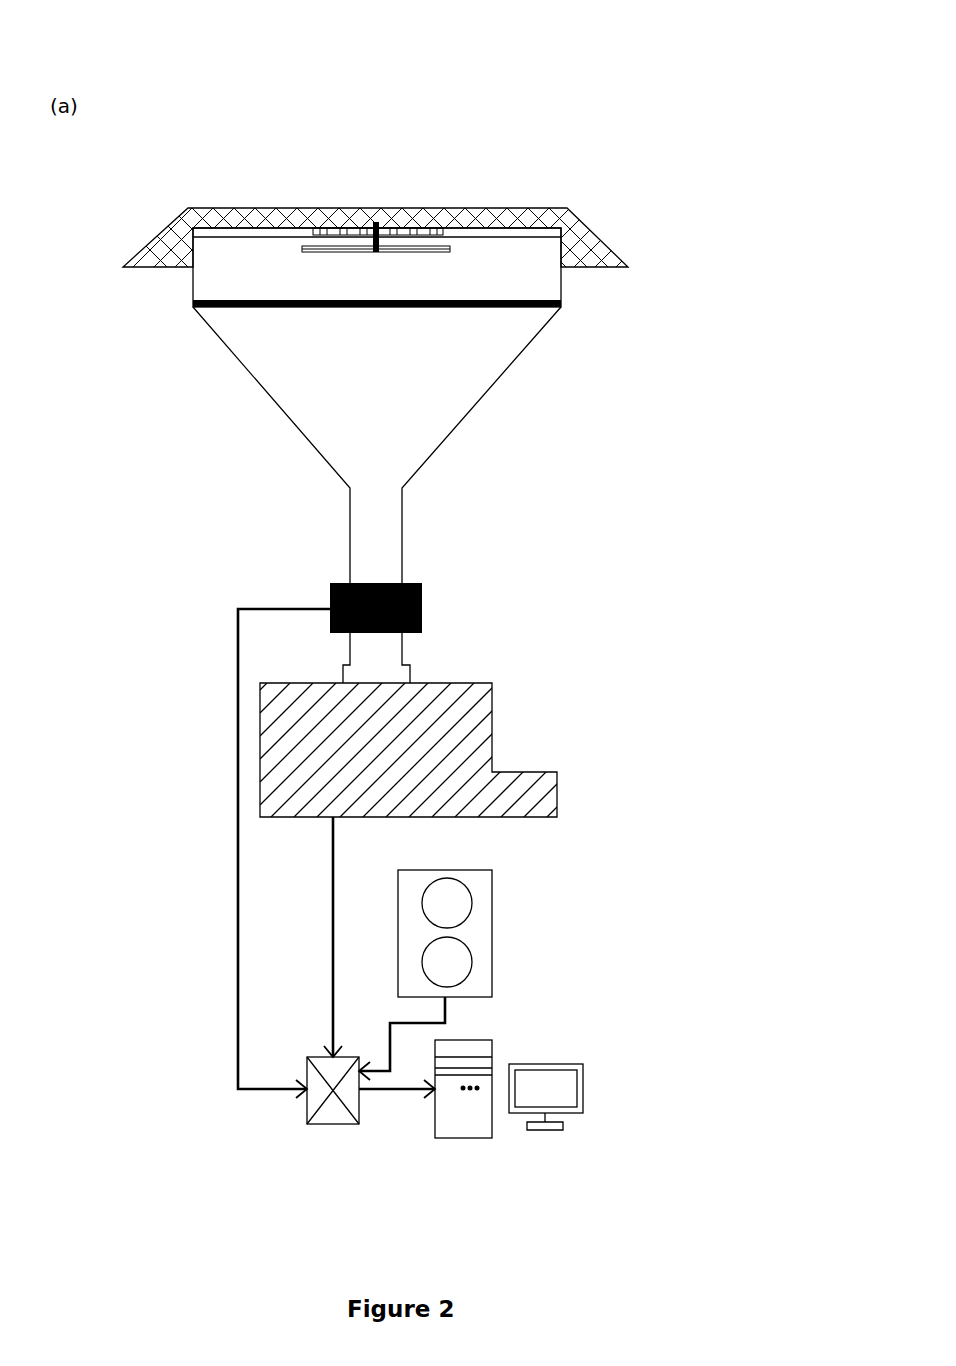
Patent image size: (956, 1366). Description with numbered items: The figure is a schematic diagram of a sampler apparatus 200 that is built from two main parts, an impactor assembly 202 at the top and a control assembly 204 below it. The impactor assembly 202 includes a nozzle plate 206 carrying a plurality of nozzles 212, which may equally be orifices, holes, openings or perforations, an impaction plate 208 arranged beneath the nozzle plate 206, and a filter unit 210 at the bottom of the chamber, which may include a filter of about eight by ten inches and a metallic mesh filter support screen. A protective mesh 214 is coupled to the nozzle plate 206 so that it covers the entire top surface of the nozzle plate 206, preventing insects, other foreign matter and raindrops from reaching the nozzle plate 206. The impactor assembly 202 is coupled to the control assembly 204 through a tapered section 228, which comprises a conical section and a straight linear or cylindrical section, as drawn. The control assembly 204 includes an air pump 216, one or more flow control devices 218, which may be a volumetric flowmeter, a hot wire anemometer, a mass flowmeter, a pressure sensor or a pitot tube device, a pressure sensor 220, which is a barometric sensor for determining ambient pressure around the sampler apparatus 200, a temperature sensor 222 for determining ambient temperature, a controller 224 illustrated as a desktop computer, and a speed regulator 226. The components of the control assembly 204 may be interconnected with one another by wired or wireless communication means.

The sampler apparatus 200 is at (496, 54).
The impactor assembly 202 is at (638, 225).
The control assembly 204 is at (205, 573).
The nozzle plate 206 is at (233, 229).
The impaction plate 208 is at (450, 249).
The filter unit 210 is at (212, 300).
The nozzles 212 is at (400, 229).
The protective mesh 214 is at (472, 228).
The air pump 216 is at (525, 772).
The flow control devices 218 is at (422, 600).
The pressure sensor 220 is at (467, 915).
The temperature sensor 222 is at (467, 980).
The controller 224 is at (560, 1065).
The speed regulator 226 is at (332, 1124).
The tapered section 228 is at (136, 308).